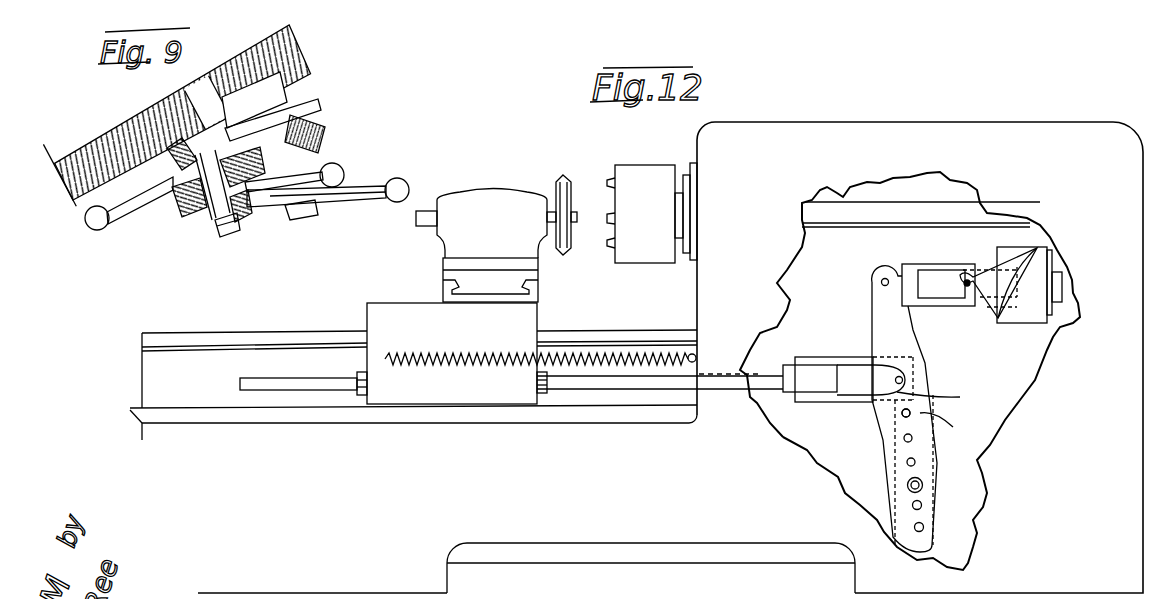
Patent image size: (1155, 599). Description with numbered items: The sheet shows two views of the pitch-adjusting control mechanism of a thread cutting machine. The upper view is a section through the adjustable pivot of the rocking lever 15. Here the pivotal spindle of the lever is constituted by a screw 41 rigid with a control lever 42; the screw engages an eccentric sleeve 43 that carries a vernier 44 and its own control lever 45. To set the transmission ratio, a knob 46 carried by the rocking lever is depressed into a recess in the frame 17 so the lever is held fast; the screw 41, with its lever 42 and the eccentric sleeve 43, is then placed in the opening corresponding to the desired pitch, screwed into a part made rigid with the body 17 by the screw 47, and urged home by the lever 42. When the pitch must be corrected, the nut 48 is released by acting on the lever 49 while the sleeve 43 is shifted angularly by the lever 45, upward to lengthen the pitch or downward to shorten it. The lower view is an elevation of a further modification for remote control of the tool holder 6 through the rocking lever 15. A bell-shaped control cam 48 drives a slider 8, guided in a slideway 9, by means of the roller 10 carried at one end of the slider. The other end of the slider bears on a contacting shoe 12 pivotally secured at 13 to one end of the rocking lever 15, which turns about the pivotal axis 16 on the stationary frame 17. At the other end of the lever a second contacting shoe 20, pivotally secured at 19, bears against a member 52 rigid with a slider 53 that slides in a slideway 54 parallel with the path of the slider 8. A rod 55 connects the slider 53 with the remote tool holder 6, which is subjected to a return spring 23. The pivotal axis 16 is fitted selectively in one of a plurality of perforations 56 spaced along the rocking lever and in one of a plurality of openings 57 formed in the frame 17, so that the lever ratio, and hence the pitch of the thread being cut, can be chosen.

In FIG. 12, the tool holder 6 is at (388, 353).
In FIG. 12, the slider 8 is at (933, 280).
In FIG. 12, the slideway 9 is at (960, 262).
In FIG. 12, the roller 10 is at (973, 275).
In FIG. 12, the shoe 12 is at (897, 280).
In FIG. 12, the pivot 13 is at (884, 279).
In FIG. 9, the rocking lever 15 is at (322, 127).
In FIG. 12, the rocking lever 15 is at (910, 339).
In FIG. 9, the pivotal axis 16 is at (205, 220).
In FIG. 12, the pivotal axis 16 is at (922, 485).
In FIG. 9, the frame 17 is at (227, 60).
In FIG. 12, the frame 17 is at (492, 461).
In FIG. 12, the pivot 19 is at (907, 377).
In FIG. 12, the shoe 20 is at (939, 402).
In FIG. 12, the return spring 23 is at (580, 352).
In FIG. 9, the screw 41 is at (173, 207).
In FIG. 9, the control lever 42 is at (405, 182).
In FIG. 12, the control lever 42 is at (414, 176).
In FIG. 9, the eccentric sleeve 43 is at (200, 220).
In FIG. 9, the vernier 44 is at (237, 220).
In FIG. 9, the control lever 45 is at (340, 171).
In FIG. 9, the knob 46 is at (167, 180).
In FIG. 9, the screw 47 is at (265, 92).
In FIG. 9, the nut 48 is at (243, 150).
In FIG. 12, the nut 48 is at (1030, 273).
In FIG. 9, the lever 49 is at (97, 231).
In FIG. 12, the member 52 is at (877, 378).
In FIG. 12, the slider 53 is at (803, 370).
In FIG. 12, the slideway 54 is at (812, 397).
In FIG. 12, the rod 55 is at (630, 383).
In FIG. 12, the perforations 56 is at (903, 416).
In FIG. 12, the openings 57 is at (947, 424).